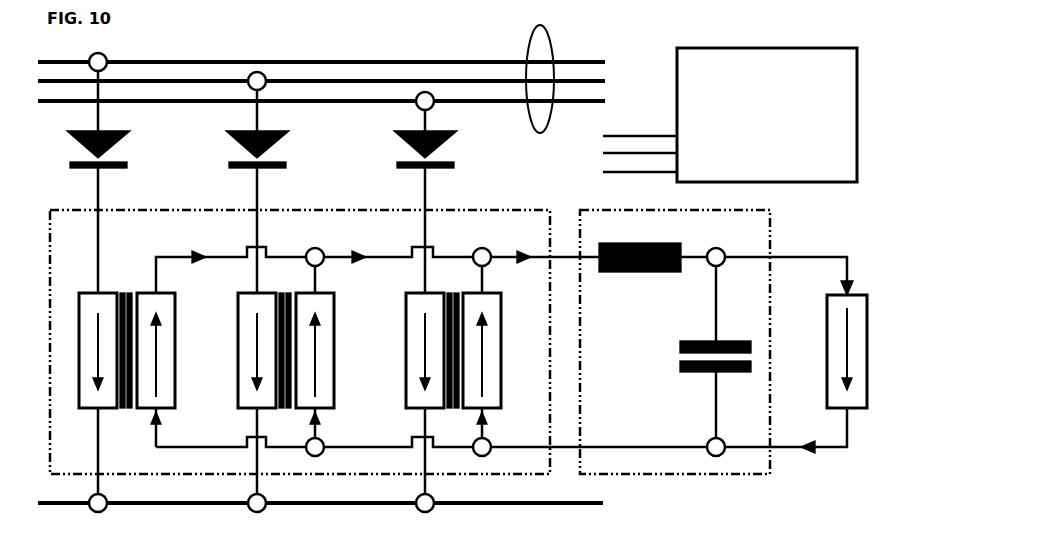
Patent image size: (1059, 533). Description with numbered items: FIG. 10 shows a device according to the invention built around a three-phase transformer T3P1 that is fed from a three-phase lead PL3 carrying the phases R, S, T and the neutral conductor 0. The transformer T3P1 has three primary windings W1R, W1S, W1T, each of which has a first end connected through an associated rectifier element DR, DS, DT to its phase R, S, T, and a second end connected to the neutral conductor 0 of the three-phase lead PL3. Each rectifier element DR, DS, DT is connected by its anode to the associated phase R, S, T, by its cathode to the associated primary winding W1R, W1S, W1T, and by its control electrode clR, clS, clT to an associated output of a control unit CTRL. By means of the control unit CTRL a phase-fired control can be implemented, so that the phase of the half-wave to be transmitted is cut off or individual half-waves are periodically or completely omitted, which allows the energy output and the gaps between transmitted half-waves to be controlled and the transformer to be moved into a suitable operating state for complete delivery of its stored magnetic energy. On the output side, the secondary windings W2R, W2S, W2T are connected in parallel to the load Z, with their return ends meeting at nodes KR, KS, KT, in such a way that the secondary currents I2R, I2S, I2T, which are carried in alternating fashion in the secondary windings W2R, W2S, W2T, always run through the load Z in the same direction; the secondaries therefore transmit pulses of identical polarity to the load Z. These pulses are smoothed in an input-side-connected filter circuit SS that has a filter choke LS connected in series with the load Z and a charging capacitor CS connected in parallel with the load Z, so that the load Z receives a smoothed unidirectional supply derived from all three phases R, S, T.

The phase R is at (333, 66).
The phase S is at (333, 88).
The phase T is at (333, 111).
The three-phase lead PL3 is at (516, 79).
The rectifier element DR is at (97, 182).
The rectifier element DS is at (256, 191).
The rectifier element DT is at (425, 201).
The control electrode clR is at (144, 178).
The control electrode clS is at (303, 178).
The control electrode clT is at (471, 178).
The control unit CTRL is at (716, 118).
The filter circuit SS is at (675, 342).
The secondary current I2R is at (137, 336).
The secondary current I2S is at (295, 336).
The secondary current I2T is at (462, 336).
The primary winding W1R is at (86, 336).
The secondary winding W2R is at (146, 336).
The primary winding W1S is at (245, 336).
The secondary winding W2S is at (305, 336).
The primary winding W1T is at (412, 336).
The secondary winding W2T is at (471, 336).
The secondary return node of phase R KR is at (218, 427).
The secondary return node of phase S KS is at (380, 432).
The secondary return node of phase T KT is at (579, 432).
The three-phase transformer T3P1 is at (377, 258).
The filter choke LS is at (657, 275).
The smoothing capacitor CS is at (698, 352).
The load Z is at (808, 356).
The neutral conductor 0 is at (333, 504).